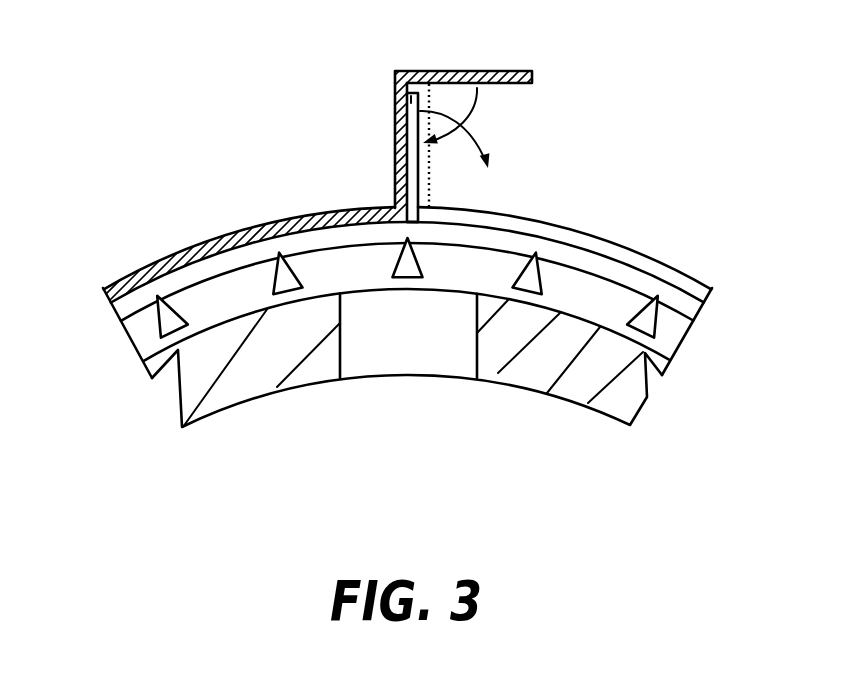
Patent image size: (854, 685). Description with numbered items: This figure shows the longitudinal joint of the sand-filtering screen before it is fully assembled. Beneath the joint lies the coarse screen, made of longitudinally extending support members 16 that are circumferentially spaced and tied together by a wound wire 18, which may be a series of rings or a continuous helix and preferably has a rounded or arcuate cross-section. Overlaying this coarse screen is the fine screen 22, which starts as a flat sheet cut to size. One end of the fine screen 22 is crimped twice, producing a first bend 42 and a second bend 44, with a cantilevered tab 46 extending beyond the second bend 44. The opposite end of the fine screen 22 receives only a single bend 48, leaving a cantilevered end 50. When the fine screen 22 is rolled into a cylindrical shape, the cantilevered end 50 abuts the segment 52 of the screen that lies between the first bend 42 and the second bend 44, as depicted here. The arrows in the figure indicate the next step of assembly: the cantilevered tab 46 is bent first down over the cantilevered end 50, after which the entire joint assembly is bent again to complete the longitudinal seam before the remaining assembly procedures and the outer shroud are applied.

The longitudinally extending support members 16 is at (180, 398).
The wound wire 18 is at (123, 303).
The fine screen 22 is at (160, 253).
The first bend 42 is at (395, 208).
The second bend 44 is at (395, 72).
The cantilevered tab 46 is at (480, 71).
The single bend 48 is at (421, 210).
The cantilevered end 50 is at (407, 94).
The segment 52 is at (397, 147).